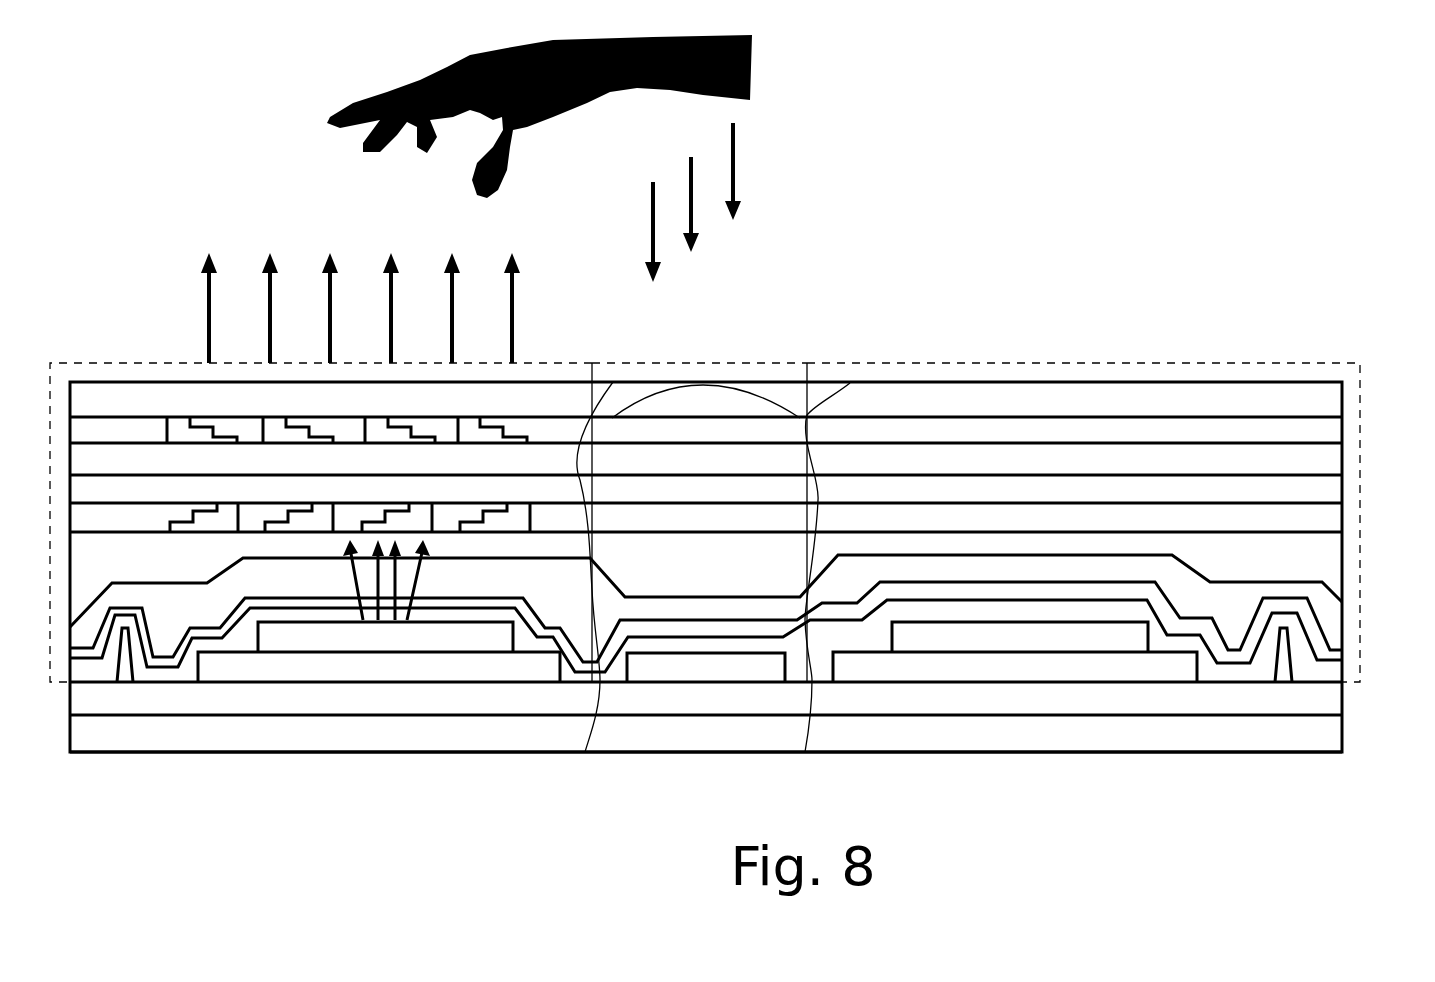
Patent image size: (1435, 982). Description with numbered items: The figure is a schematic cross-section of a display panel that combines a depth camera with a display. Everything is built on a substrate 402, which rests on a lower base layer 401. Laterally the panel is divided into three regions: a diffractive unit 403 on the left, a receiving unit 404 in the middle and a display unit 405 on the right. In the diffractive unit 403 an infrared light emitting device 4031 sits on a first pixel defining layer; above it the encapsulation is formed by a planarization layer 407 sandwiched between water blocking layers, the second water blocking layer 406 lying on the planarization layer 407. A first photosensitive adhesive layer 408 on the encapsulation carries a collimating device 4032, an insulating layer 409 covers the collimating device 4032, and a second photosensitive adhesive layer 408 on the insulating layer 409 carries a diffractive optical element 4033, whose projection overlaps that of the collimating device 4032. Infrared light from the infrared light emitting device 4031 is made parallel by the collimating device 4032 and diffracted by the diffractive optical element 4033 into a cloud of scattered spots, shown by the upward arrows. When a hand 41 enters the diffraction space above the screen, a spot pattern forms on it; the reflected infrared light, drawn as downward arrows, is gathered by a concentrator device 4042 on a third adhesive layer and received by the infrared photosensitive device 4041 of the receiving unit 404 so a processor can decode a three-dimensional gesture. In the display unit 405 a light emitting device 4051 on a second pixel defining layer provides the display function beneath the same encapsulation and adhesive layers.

The hand 41 is at (752, 77).
The substrate 401 is at (1333, 728).
The substrate 402 is at (1333, 710).
The diffractive unit 403 is at (112, 360).
The receiving unit 404 is at (670, 362).
The display unit 405 is at (1052, 362).
The second water blocking layer 406 is at (927, 558).
The planarization layer 407 is at (982, 583).
The photosensitive adhesive layer 408 is at (1180, 445).
The insulating layer 409 is at (905, 476).
The infrared light emitting device 4031 is at (482, 623).
The collimating device 4032 is at (230, 503).
The diffractive optical element 4033 is at (377, 420).
The infrared photosensitive device 4041 is at (702, 655).
The concentrator device 4042 is at (677, 415).
The light emitting device 4051 is at (1115, 622).